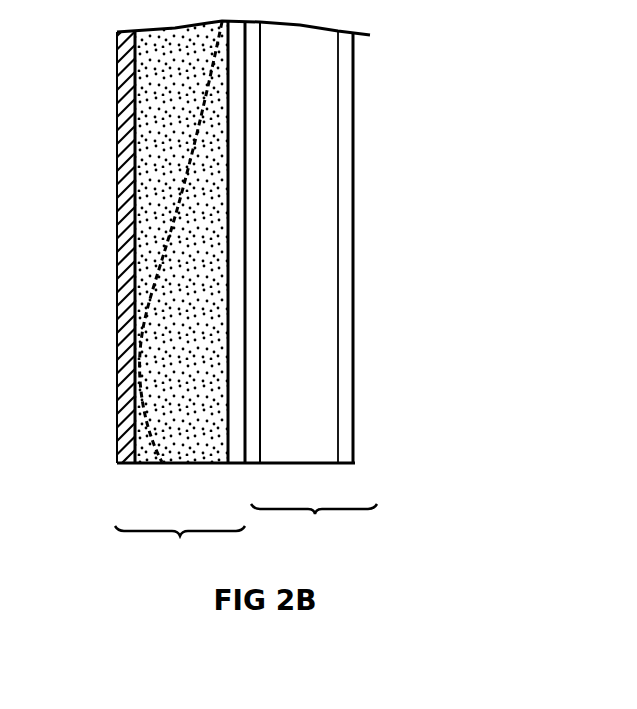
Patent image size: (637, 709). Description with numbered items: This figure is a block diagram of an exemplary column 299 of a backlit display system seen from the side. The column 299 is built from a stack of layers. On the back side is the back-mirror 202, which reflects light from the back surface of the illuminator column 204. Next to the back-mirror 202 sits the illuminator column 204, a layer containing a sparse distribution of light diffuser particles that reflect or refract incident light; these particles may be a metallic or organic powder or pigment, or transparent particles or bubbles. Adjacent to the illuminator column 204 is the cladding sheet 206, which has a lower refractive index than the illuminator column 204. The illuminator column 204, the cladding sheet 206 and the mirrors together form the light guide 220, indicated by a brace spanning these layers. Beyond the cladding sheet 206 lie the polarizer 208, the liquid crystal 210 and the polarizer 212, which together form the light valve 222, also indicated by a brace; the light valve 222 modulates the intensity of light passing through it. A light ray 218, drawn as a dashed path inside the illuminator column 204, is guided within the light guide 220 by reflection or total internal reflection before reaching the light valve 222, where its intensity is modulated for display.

The column 299 is at (218, 283).
The back-mirror 202 is at (125, 197).
The illuminator column 204 is at (188, 463).
The cladding sheet 206 is at (235, 463).
The polarizer 208 is at (253, 463).
The liquid crystal 210 is at (305, 463).
The polarizer 212 is at (350, 463).
The light ray 218 is at (205, 130).
The light guide 220 is at (180, 545).
The light valve 222 is at (314, 524).